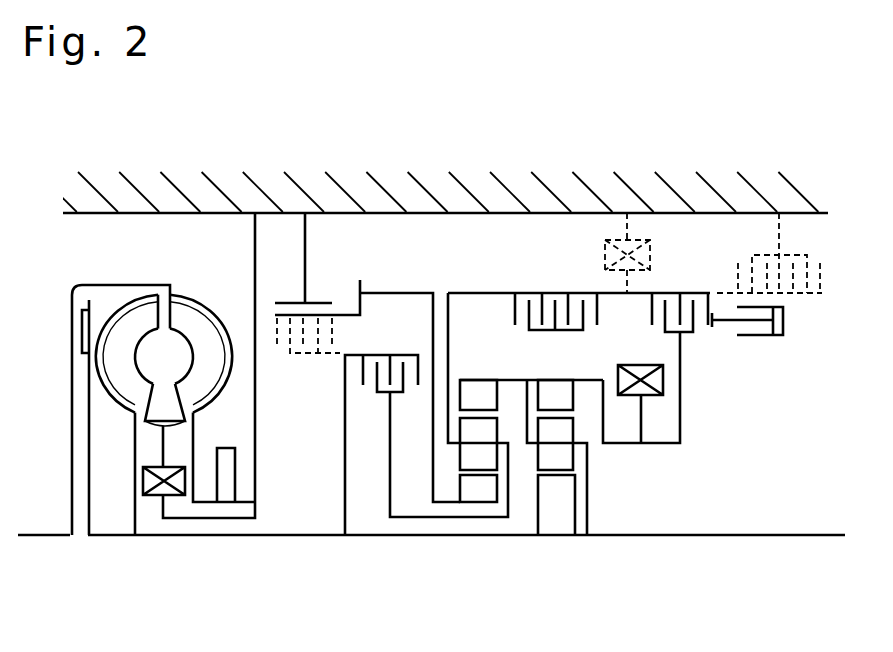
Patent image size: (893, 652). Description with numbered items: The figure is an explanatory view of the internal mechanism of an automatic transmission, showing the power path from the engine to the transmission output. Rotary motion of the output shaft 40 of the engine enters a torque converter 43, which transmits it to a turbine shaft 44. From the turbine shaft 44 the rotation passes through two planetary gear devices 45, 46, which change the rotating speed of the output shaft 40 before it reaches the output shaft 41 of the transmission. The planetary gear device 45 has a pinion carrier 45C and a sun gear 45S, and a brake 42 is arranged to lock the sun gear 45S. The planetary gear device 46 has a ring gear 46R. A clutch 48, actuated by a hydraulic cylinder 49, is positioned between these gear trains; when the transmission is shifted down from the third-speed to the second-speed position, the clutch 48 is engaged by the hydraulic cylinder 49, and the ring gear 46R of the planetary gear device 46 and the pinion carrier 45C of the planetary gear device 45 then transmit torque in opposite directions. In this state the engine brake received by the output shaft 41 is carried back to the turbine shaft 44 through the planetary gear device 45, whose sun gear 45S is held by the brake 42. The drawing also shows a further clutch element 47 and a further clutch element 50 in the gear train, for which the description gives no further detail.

The output shaft of the engine 40 is at (35, 535).
The output shaft of the transmission 41 is at (752, 535).
The brake 42 is at (315, 302).
The torque converter 43 is at (212, 305).
The turbine shaft 44 is at (300, 535).
The planetary gear device 45 is at (385, 450).
The pinion carrier 45C is at (468, 429).
The sun gear 45S is at (468, 487).
The planetary gear device 46 is at (529, 475).
The ring gear 46R is at (540, 380).
The one-way clutch 47 is at (615, 375).
The clutch 48 is at (687, 334).
The hydraulic cylinder 49 is at (758, 336).
The clutch 50 is at (558, 293).